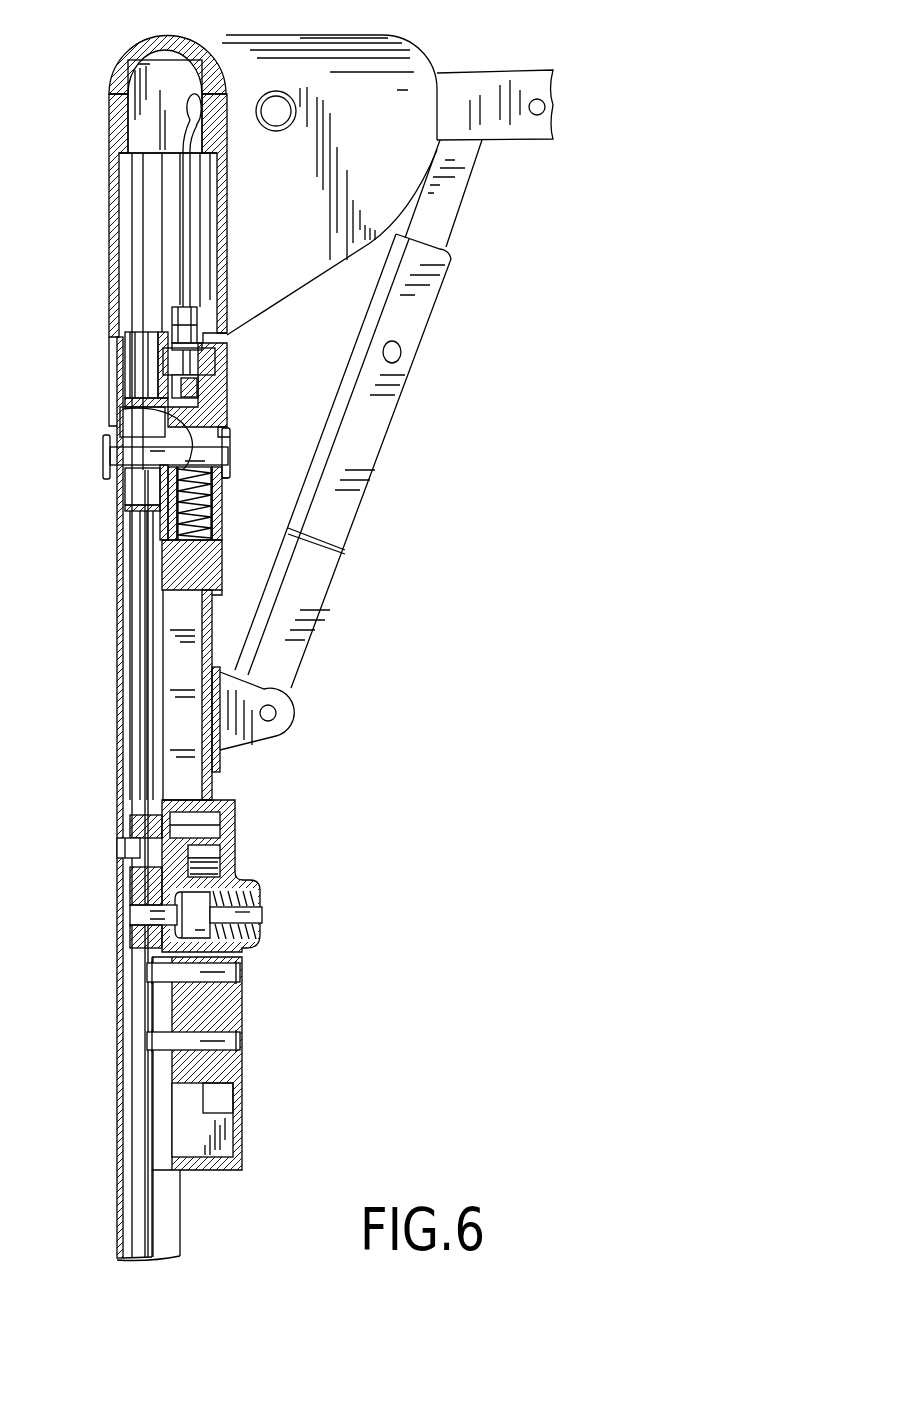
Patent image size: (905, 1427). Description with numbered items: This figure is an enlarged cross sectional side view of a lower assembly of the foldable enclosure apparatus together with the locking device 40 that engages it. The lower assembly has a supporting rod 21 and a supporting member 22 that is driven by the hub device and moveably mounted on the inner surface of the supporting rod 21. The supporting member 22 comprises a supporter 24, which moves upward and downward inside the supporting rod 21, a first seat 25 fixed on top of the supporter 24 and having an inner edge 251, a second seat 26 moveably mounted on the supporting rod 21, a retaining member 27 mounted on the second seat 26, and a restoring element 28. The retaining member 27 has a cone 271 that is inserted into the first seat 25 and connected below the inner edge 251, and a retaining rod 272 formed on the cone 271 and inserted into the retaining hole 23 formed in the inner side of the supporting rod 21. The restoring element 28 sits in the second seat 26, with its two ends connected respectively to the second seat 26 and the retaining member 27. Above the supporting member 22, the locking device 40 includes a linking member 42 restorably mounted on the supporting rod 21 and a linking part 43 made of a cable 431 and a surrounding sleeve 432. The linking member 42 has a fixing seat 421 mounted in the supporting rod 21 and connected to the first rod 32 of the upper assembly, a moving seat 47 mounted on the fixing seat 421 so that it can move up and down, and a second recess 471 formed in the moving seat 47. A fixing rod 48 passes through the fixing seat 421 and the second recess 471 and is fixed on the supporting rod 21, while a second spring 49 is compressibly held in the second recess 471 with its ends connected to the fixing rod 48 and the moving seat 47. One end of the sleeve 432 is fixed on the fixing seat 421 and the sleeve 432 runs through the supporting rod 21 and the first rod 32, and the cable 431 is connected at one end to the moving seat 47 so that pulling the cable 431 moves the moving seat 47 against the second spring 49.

The supporting rod 21 is at (121, 1073).
The supporting member 22 is at (160, 1247).
The retaining hole 23 is at (140, 915).
The supporter 24 is at (150, 1222).
The first seat 25 is at (155, 1160).
The second seat 26 is at (236, 827).
The retaining member 27 is at (265, 908).
The restoring element 28 is at (252, 938).
The first rod 32 is at (468, 88).
The locking device 40 is at (152, 278).
The linking member 42 is at (157, 376).
The linking part 43 is at (201, 252).
The moving seat 47 is at (169, 528).
The fixing rod 48 is at (118, 456).
The second spring 49 is at (213, 500).
The inner edge 251 is at (200, 868).
The cone 271 is at (178, 890).
The retaining rod 272 is at (145, 925).
The fixing seat 421 is at (221, 404).
The cable 431 is at (204, 364).
The sleeve 432 is at (187, 192).
The second recess 471 is at (122, 409).